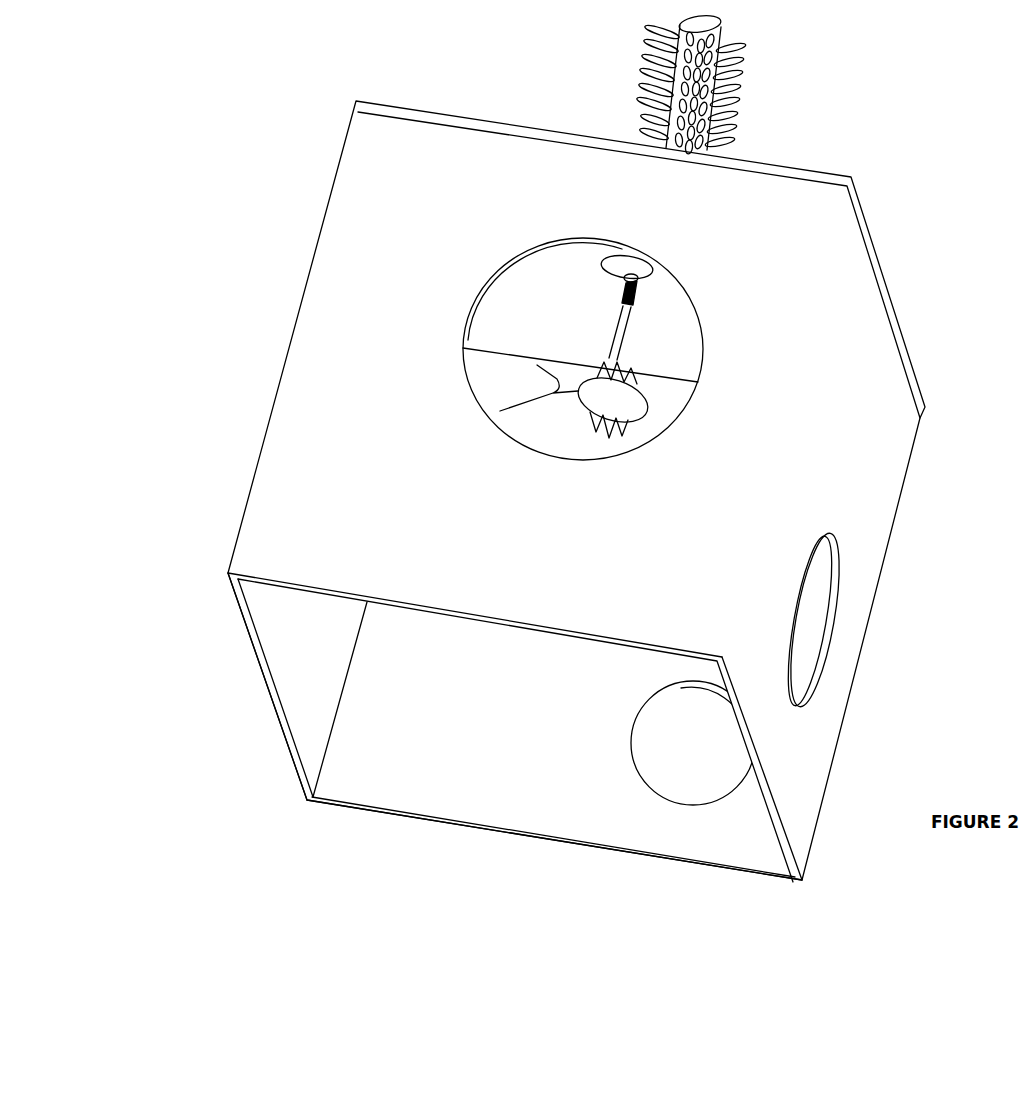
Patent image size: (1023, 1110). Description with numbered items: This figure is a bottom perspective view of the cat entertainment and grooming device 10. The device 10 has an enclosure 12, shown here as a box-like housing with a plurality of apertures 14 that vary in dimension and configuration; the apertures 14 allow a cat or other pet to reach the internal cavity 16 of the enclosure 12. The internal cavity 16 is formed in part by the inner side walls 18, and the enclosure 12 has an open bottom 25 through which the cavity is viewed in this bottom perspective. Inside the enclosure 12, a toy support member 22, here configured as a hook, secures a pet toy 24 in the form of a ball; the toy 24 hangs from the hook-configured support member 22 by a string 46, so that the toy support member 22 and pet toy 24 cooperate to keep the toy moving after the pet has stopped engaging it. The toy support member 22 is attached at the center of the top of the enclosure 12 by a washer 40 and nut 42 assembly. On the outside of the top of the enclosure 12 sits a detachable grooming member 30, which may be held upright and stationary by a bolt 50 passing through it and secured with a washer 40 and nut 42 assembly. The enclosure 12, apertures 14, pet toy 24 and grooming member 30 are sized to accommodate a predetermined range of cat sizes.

The cat entertainment and grooming device 10 is at (894, 222).
The enclosure 12 is at (887, 485).
The apertures 14 is at (700, 322).
The internal cavity 16 is at (382, 766).
The inner side walls 18 is at (308, 708).
The toy support member 22 is at (624, 381).
The pet toy 24 is at (625, 412).
The open bottom 25 is at (260, 663).
The grooming member 30 is at (715, 87).
The washer 40 is at (607, 268).
The nut 42 is at (618, 307).
The string 46 is at (613, 352).
The bolt 50 is at (638, 296).